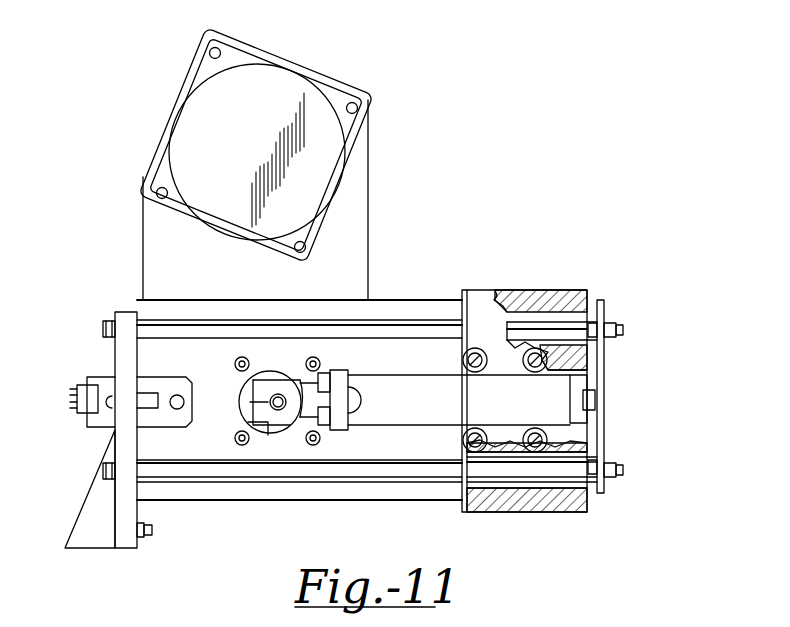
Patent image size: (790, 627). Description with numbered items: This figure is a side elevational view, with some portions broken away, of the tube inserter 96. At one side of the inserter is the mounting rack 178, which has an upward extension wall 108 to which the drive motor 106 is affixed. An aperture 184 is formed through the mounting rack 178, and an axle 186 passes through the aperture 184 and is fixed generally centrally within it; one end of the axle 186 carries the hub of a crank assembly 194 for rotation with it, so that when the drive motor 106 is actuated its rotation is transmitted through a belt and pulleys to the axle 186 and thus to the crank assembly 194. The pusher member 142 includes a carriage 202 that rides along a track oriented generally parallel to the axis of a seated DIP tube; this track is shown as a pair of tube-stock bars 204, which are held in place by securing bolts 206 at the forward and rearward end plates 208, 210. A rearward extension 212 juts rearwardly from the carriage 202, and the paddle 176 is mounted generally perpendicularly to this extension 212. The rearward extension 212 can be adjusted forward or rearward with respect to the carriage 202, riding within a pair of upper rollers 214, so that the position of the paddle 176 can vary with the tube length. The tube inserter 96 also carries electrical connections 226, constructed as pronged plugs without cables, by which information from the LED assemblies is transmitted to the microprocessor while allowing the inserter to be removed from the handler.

The tube inserter 96 is at (467, 209).
The drive motor 106 is at (258, 77).
The upward extension wall 108 is at (358, 180).
The pusher member 142 is at (431, 436).
The paddle 176 is at (345, 383).
The mounting rack 178 is at (210, 457).
The aperture 184 is at (249, 389).
The axle 186 is at (302, 420).
The crank assembly 194 is at (271, 372).
The carriage 202 is at (480, 298).
The tube-stock bars 204 is at (193, 318).
The securing bolts 206 is at (104, 328).
The forward end plate 208 is at (602, 378).
The rearward end plate 210 is at (123, 452).
The rearward extension 212 is at (387, 415).
The upper rollers 214 is at (533, 374).
The electrical connections 226 is at (85, 388).